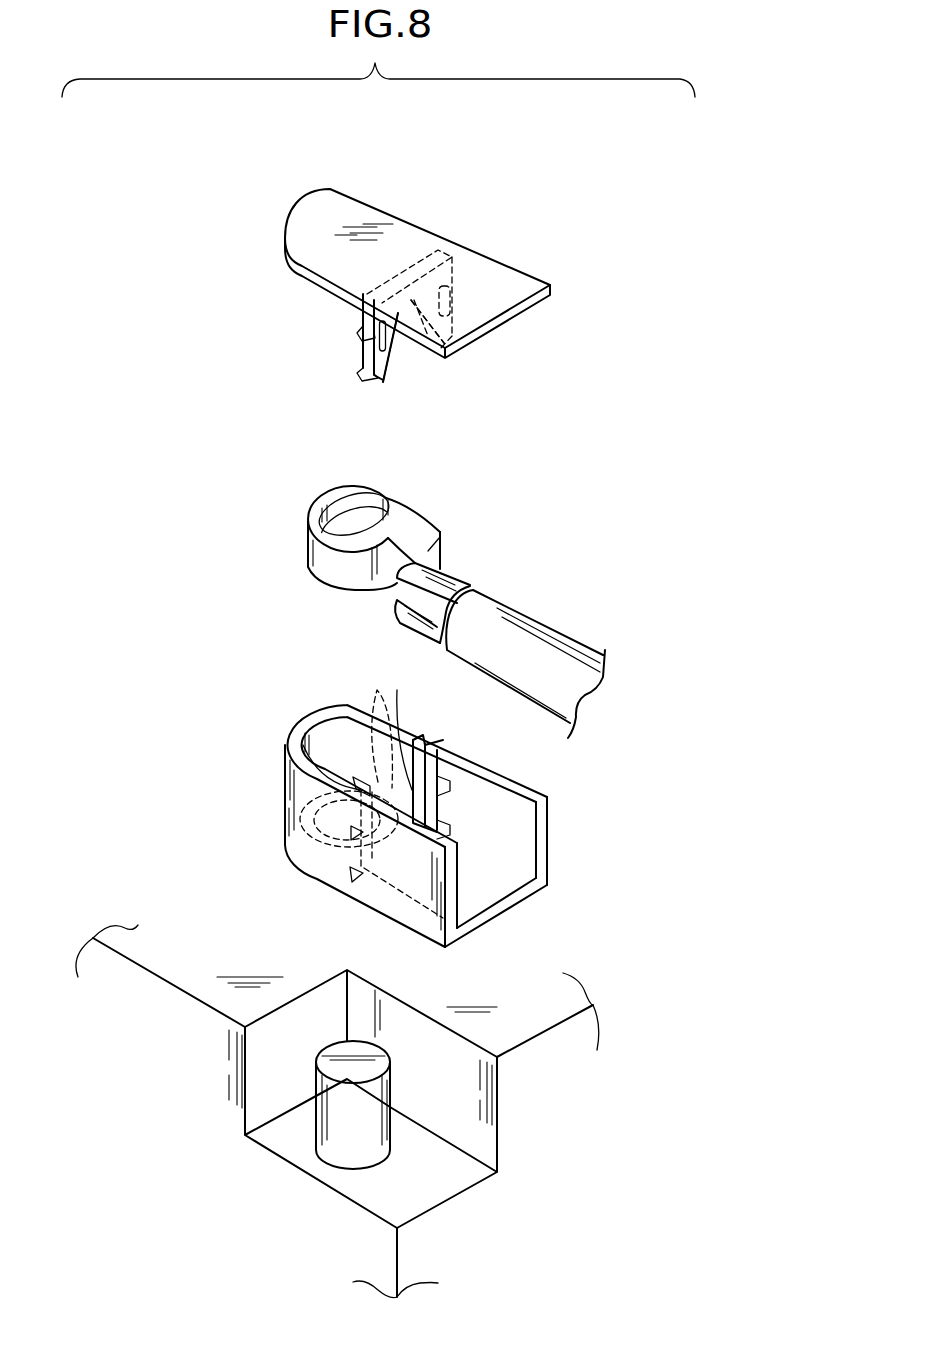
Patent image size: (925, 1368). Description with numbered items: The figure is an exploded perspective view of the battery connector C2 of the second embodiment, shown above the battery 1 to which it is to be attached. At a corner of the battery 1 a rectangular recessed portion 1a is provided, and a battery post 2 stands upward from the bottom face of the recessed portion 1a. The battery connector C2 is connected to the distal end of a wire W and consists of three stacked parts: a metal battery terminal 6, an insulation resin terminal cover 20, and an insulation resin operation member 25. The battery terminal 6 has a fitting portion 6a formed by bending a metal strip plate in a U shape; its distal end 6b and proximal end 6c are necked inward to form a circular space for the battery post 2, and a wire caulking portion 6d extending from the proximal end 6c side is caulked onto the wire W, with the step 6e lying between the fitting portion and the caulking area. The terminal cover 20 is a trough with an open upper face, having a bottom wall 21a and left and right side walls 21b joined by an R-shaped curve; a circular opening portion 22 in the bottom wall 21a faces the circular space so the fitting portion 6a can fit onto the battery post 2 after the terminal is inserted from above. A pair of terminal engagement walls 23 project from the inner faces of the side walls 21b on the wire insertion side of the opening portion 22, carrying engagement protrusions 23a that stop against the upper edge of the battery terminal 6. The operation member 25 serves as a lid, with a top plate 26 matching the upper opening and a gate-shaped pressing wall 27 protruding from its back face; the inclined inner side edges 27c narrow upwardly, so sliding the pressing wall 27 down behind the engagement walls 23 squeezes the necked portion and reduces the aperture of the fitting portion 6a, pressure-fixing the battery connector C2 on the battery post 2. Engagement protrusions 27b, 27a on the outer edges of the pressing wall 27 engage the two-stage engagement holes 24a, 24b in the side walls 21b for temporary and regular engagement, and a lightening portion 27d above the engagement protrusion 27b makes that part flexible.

The battery 1 is at (148, 1056).
The recessed portion 1a is at (345, 1182).
The battery post 2 is at (315, 1130).
The battery terminal 6 is at (423, 496).
The fitting portion 6a is at (316, 508).
The distal end 6b is at (438, 524).
The proximal end 6c is at (390, 593).
The wire caulking portion 6d is at (460, 578).
The flange / step of terminal 6e is at (435, 546).
The wire W is at (532, 630).
The terminal cover 20 is at (275, 755).
The bottom wall 21a is at (507, 903).
The side wall 21b is at (542, 845).
The opening portion 22 is at (300, 812).
The terminal engagement wall 23 is at (355, 775).
The engagement protrusion 23a is at (390, 690).
The engagement hole 24a is at (447, 786).
The engagement hole 24b is at (354, 874).
The operation member 25 is at (381, 184).
The top plate 26 is at (410, 227).
The pressing wall 27 is at (363, 317).
The engagement protrusion 27a is at (358, 370).
The engagement protrusion 27b is at (360, 335).
The inner side edge 27c is at (383, 382).
The lightening portion 27d is at (397, 343).
The battery connector C2 is at (601, 446).